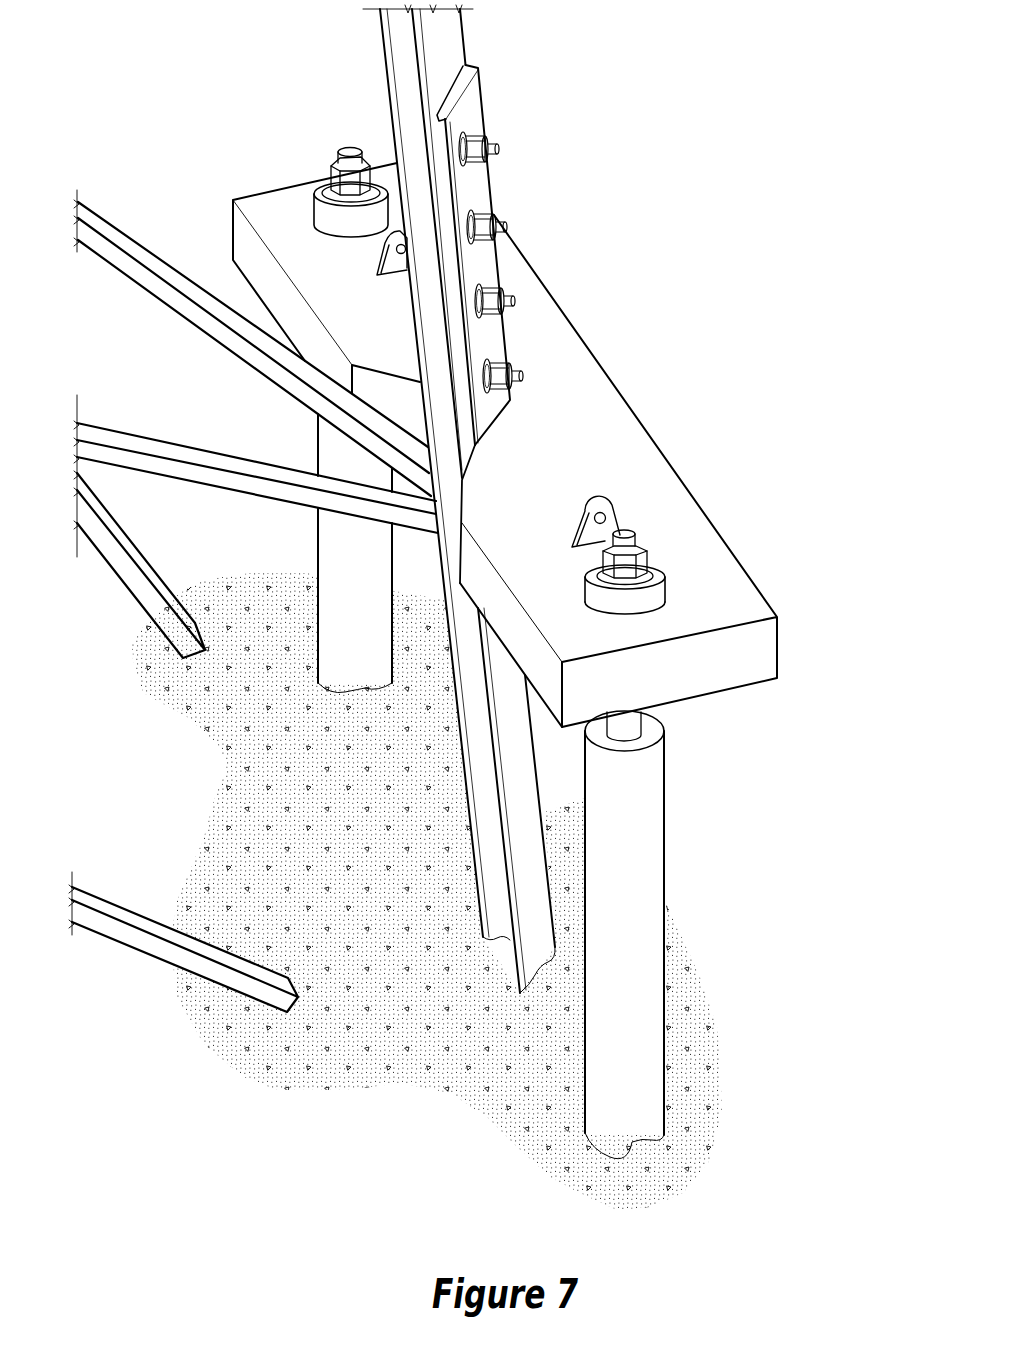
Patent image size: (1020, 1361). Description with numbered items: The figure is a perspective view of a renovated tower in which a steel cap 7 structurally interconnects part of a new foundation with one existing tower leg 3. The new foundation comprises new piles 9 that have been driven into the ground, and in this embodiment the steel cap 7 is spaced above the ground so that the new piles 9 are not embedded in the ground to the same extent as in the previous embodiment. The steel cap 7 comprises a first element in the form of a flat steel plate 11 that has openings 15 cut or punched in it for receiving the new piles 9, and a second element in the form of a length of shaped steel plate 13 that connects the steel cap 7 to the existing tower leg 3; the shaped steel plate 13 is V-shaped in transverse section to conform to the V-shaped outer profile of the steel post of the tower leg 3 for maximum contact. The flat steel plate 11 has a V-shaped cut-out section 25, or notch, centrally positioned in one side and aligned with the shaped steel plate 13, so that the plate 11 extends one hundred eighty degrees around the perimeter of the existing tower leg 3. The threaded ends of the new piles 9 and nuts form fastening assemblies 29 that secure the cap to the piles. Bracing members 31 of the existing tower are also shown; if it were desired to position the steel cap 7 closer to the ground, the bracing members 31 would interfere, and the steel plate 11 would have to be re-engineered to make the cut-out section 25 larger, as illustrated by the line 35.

The existing tower leg 3 is at (441, 38).
The steel cap 7 is at (645, 340).
The new piles 9 is at (647, 780).
The flat steel plate 11 is at (566, 474).
The shaped steel plate 13 is at (472, 100).
The openings 15 is at (655, 582).
The V-shaped cut-out section 25 is at (408, 410).
The fastening assemblies 29 is at (641, 541).
The bracing members 31 is at (173, 298).
The line 35 is at (462, 506).